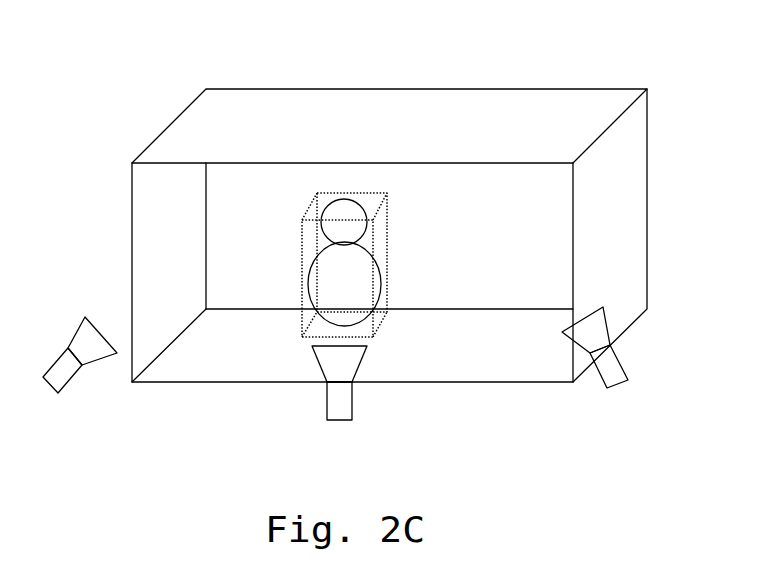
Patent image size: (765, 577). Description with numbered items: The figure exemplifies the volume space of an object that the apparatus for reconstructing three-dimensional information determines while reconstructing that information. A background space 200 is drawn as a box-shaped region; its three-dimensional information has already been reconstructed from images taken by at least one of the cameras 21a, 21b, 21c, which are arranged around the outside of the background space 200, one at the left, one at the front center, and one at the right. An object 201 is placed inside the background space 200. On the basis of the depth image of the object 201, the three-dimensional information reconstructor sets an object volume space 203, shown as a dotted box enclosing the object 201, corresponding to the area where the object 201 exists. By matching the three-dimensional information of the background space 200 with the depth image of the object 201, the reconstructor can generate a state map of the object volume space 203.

The background space 200 is at (405, 110).
The object 201 is at (362, 265).
The object volume space 203 is at (302, 258).
The camera 21a is at (72, 375).
The camera 21b is at (340, 408).
The camera 21c is at (615, 375).